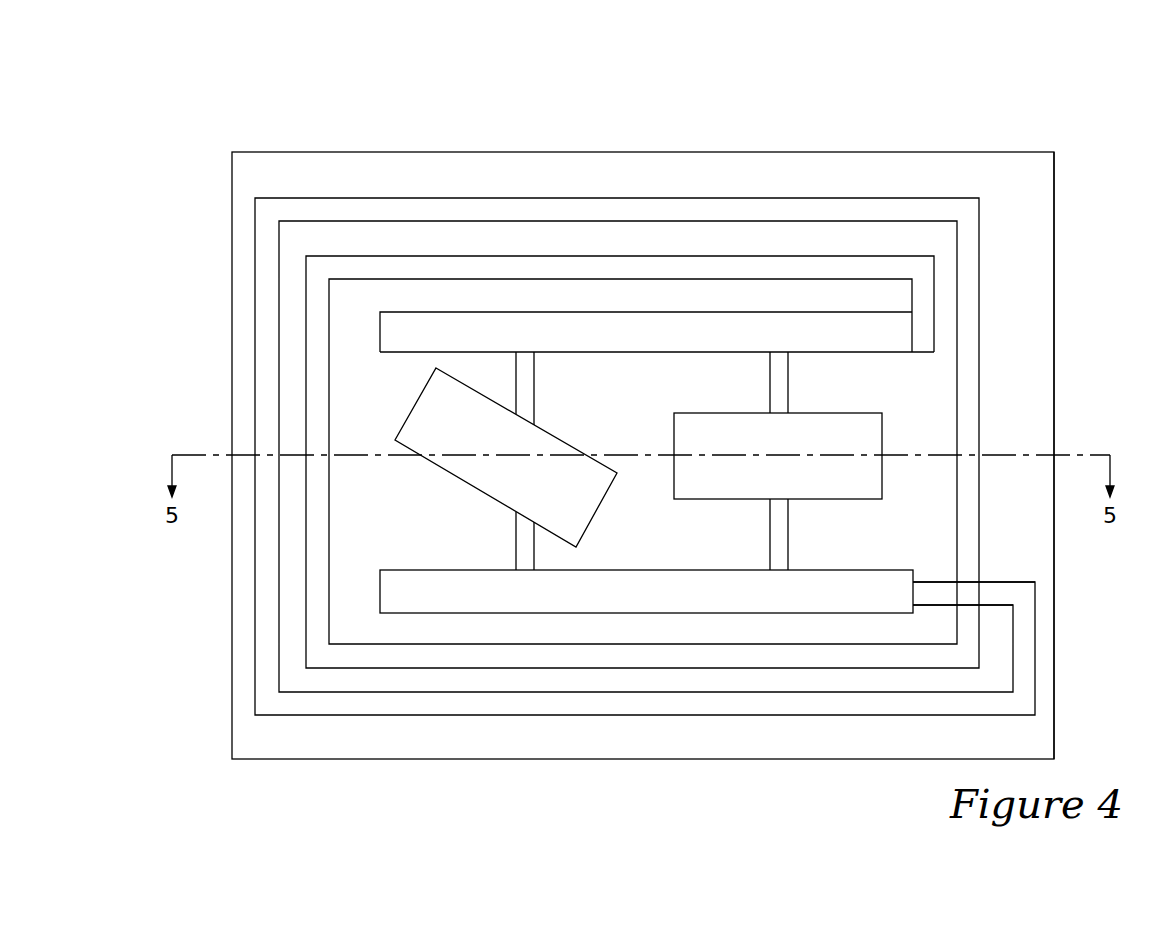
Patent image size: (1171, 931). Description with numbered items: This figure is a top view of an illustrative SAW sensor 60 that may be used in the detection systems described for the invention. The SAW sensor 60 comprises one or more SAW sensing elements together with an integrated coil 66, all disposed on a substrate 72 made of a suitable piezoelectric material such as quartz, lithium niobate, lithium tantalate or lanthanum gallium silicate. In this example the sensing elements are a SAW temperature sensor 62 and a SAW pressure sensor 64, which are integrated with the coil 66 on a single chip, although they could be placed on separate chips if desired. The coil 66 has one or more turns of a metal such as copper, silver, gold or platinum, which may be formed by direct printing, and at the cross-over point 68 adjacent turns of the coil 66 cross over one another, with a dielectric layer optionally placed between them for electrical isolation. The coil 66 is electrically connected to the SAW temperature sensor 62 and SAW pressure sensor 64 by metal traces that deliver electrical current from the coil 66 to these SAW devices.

The SAW sensor 60 is at (1095, 107).
The SAW temperature sensor 62 is at (428, 413).
The SAW pressure sensor 64 is at (870, 432).
The coil 66 is at (777, 208).
The cross-over point 68 is at (979, 605).
The substrate 72 is at (1032, 293).